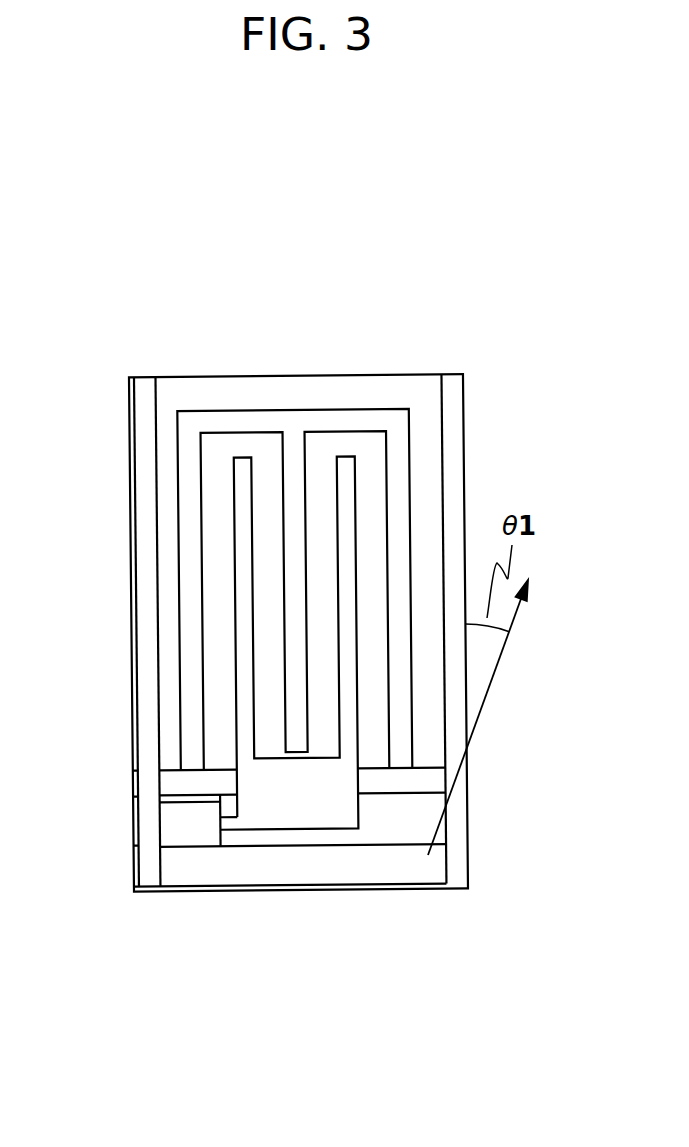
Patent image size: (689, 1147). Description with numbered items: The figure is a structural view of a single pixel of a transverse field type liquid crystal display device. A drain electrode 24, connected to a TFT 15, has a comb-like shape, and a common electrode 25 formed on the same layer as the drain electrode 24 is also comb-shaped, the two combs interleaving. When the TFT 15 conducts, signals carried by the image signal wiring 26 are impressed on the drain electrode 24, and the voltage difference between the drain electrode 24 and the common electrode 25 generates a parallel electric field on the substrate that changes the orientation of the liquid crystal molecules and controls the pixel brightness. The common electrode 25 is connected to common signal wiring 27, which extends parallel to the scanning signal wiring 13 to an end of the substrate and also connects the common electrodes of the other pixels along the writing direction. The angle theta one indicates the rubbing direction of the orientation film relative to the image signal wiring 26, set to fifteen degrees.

The scanning signal wiring 13 is at (230, 870).
The TFT 15 is at (187, 825).
The drain electrode 24 is at (243, 486).
The common electrode 25 is at (348, 422).
The image signal wiring 26 is at (144, 423).
The common signal wiring 27 is at (177, 778).